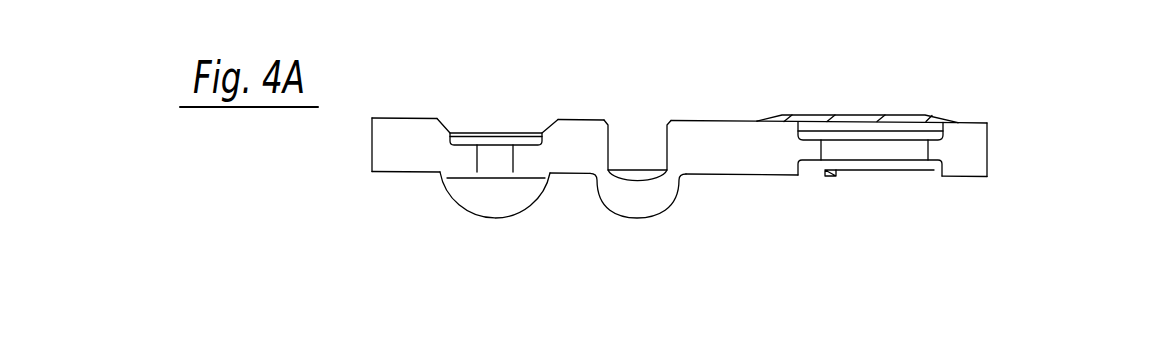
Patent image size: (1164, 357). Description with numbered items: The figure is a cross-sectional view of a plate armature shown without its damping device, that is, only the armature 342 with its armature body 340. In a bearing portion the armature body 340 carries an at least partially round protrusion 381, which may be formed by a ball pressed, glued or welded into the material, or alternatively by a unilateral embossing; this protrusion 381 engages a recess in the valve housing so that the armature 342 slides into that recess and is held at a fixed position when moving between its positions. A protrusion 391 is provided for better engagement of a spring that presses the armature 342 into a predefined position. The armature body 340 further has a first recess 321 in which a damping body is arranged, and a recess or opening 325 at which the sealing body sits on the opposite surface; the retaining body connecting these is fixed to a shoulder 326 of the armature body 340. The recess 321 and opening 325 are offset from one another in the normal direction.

The armature body 340 is at (393, 150).
The protrusion 381 is at (485, 198).
The protrusion 391 is at (657, 195).
The recess or opening 325 is at (915, 148).
The shoulder 326 is at (821, 147).
The first recess 321 is at (847, 171).
The armature 342 is at (987, 176).